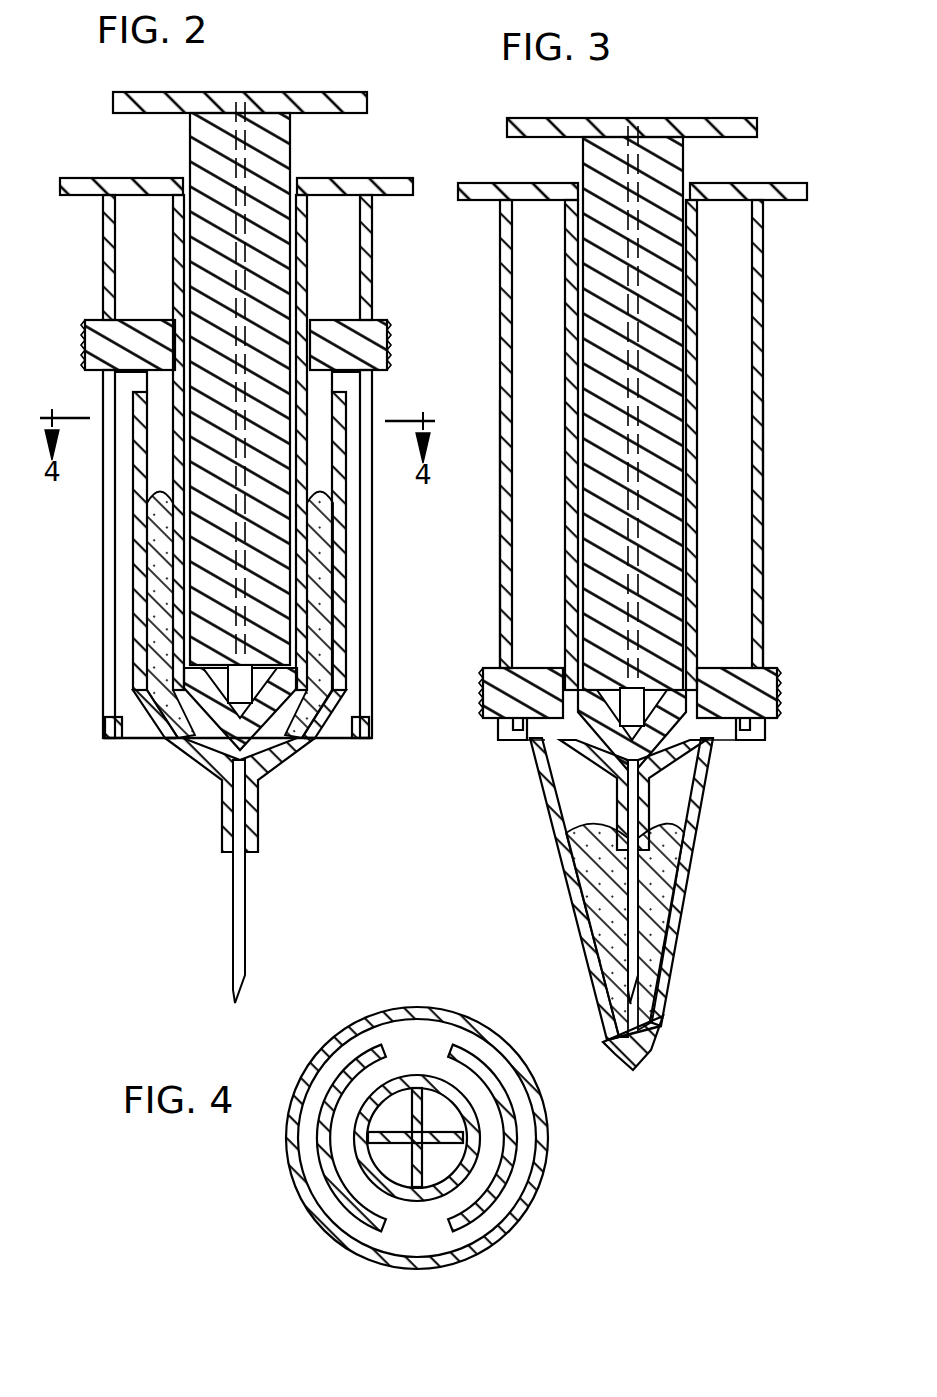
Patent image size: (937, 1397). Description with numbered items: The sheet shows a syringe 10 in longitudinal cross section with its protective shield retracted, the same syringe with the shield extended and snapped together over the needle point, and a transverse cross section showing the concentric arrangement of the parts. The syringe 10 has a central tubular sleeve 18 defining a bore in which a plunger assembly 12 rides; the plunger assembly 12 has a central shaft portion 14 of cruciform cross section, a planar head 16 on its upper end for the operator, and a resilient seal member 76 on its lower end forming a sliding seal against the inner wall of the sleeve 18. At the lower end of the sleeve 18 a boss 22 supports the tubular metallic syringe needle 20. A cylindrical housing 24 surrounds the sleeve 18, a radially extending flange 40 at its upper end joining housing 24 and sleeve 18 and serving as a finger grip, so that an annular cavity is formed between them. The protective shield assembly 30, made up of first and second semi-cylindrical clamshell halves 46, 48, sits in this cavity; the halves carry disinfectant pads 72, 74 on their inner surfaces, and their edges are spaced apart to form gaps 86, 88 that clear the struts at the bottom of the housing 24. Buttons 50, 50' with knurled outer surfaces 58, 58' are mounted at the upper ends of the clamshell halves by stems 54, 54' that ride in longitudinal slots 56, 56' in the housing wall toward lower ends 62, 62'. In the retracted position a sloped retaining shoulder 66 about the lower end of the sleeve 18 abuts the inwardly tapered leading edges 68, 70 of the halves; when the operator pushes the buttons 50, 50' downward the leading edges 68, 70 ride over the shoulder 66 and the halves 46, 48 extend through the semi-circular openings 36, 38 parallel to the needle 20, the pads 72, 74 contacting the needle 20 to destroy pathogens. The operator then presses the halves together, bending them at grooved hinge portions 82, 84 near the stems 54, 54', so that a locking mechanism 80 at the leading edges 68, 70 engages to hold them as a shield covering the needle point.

In FIG. 2, the syringe 10 is at (91, 93).
In FIG. 3, the syringe 10 is at (500, 116).
In FIG. 2, the plunger assembly 12 is at (187, 155).
In FIG. 3, the plunger assembly 12 is at (580, 170).
In FIG. 2, the central shaft portion 14 is at (291, 140).
In FIG. 3, the central shaft portion 14 is at (684, 162).
In FIG. 4, the central shaft portion 14 is at (413, 1110).
In FIG. 2, the planar head 16 is at (310, 96).
In FIG. 3, the planar head 16 is at (700, 119).
In FIG. 2, the tubular sleeve 18 is at (174, 240).
In FIG. 3, the tubular sleeve 18 is at (569, 248).
In FIG. 4, the tubular sleeve 18 is at (440, 1080).
In FIG. 2, the tubular metallic syringe needle 20 is at (236, 893).
In FIG. 3, the tubular metallic syringe needle 20 is at (624, 905).
In FIG. 2, the boss 22 is at (222, 815).
In FIG. 3, the boss 22 is at (615, 810).
In FIG. 2, the cylindrical housing 24 is at (104, 268).
In FIG. 3, the cylindrical housing 24 is at (504, 268).
In FIG. 4, the cylindrical housing 24 is at (297, 1086).
In FIG. 2, the protective shield assembly 30 is at (130, 735).
In FIG. 3, the protective shield assembly 30 is at (708, 933).
In FIG. 2, the first semi-circular opening 36 is at (136, 714).
In FIG. 3, the first semi-circular opening 36 is at (520, 742).
In FIG. 2, the second semi-circular opening 38 is at (337, 741).
In FIG. 3, the second semi-circular opening 38 is at (745, 746).
In FIG. 2, the radially extending flange 40 is at (393, 179).
In FIG. 3, the radially extending flange 40 is at (788, 183).
In FIG. 2, the first clamshell half 46 is at (134, 583).
In FIG. 3, the first clamshell half 46 is at (556, 868).
In FIG. 4, the first clamshell half 46 is at (322, 1140).
In FIG. 2, the second clamshell half 48 is at (337, 608).
In FIG. 3, the second clamshell half 48 is at (698, 872).
In FIG. 4, the second clamshell half 48 is at (508, 1168).
In FIG. 2, the button 50 is at (97, 329).
In FIG. 3, the button 50 is at (494, 683).
In FIG. 2, the button 50' is at (378, 331).
In FIG. 3, the button 50' is at (772, 685).
In FIG. 2, the stem 54 is at (102, 292).
In FIG. 3, the stem 54 is at (495, 646).
In FIG. 2, the stem 54' is at (373, 294).
In FIG. 3, the stem 54' is at (771, 648).
In FIG. 2, the longitudinally extending slot 56 is at (68, 554).
In FIG. 3, the longitudinally extending slot 56 is at (467, 534).
In FIG. 2, the longitudinally extending slot 56' is at (399, 554).
In FIG. 3, the longitudinally extending slot 56' is at (801, 534).
In FIG. 2, the knurled outer surface 58 is at (51, 341).
In FIG. 3, the knurled outer surface 58 is at (454, 693).
In FIG. 2, the knurled outer surface 58' is at (421, 343).
In FIG. 3, the knurled outer surface 58' is at (812, 693).
In FIG. 2, the lower end of slot 62 is at (101, 705).
In FIG. 3, the lower end of slot 62 is at (476, 719).
In FIG. 2, the lower end of slot 62' is at (368, 735).
In FIG. 3, the lower end of slot 62' is at (789, 739).
In FIG. 2, the sloped retaining shoulder 66 is at (170, 750).
In FIG. 3, the sloped retaining shoulder 66 is at (560, 762).
In FIG. 2, the inwardly tapered leading edge 68 is at (165, 736).
In FIG. 3, the inwardly tapered leading edge 68 is at (601, 1046).
In FIG. 3, the inwardly tapered leading edge 70 is at (660, 1050).
In FIG. 2, the disinfectant pad 72 is at (149, 528).
In FIG. 3, the disinfectant pad 72 is at (584, 895).
In FIG. 2, the disinfectant pad 74 is at (336, 560).
In FIG. 3, the disinfectant pad 74 is at (680, 897).
In FIG. 2, the resilient seal member 76 is at (261, 732).
In FIG. 3, the resilient seal member 76 is at (690, 762).
In FIG. 3, the locking mechanism 80 is at (657, 1070).
In FIG. 2, the grooved hinge portion 82 is at (138, 390).
In FIG. 3, the grooved hinge portion 82 is at (531, 746).
In FIG. 2, the grooved hinge portion 84 is at (340, 392).
In FIG. 3, the grooved hinge portion 84 is at (735, 752).
In FIG. 4, the gap 86 is at (416, 1043).
In FIG. 4, the gap 88 is at (401, 1234).